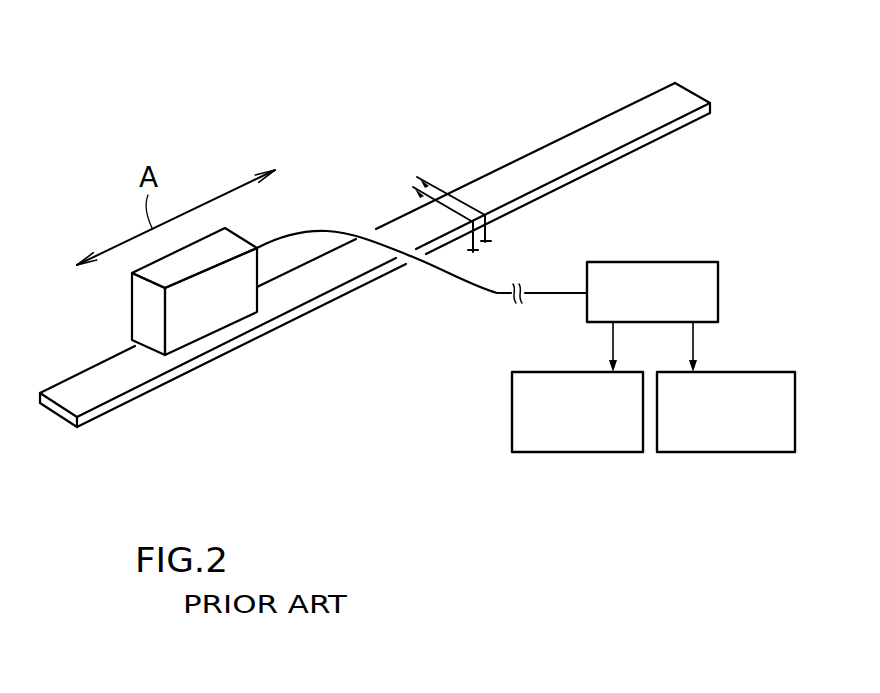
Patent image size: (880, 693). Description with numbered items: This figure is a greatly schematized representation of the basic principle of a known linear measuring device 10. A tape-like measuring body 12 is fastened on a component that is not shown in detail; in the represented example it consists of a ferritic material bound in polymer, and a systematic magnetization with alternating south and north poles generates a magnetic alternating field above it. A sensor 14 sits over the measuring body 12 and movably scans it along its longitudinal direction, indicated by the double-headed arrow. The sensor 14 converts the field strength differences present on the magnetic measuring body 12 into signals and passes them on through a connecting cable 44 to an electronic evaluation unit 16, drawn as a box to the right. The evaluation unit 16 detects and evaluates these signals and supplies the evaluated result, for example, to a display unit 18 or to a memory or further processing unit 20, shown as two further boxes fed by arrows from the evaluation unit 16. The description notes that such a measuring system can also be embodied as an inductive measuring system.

The linear measuring device 10 is at (173, 92).
The measuring body 12 is at (468, 195).
The sensor 14 is at (145, 310).
The electronic evaluation unit 16 is at (682, 261).
The display unit 18 is at (555, 455).
The memory or further processing unit 20 is at (718, 455).
The connecting cable 44 is at (538, 296).